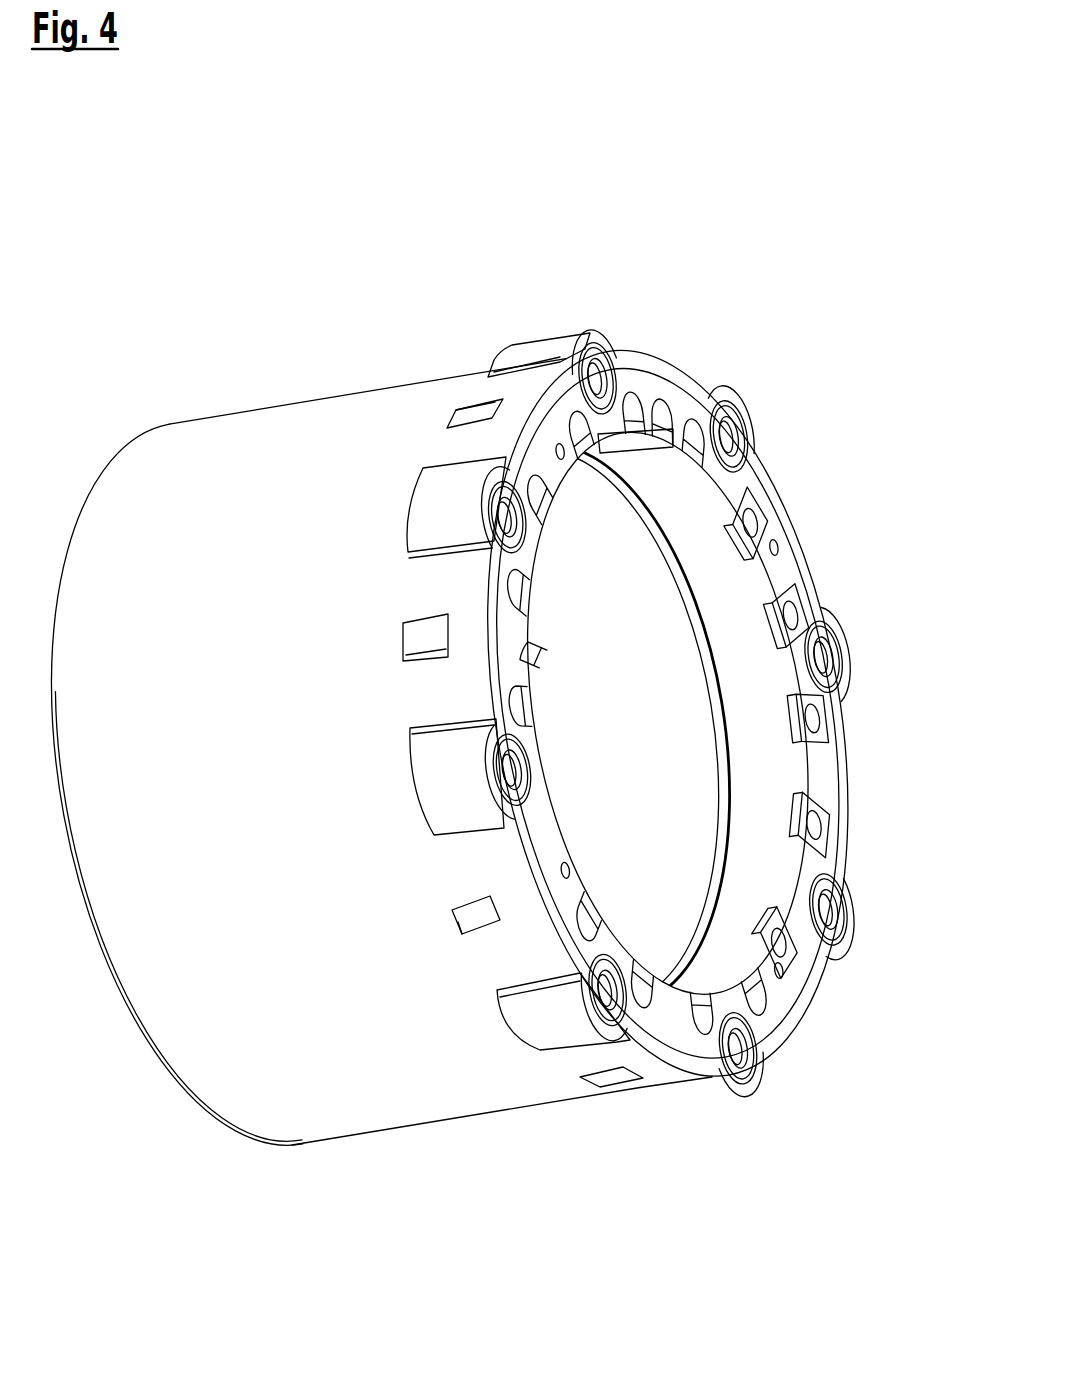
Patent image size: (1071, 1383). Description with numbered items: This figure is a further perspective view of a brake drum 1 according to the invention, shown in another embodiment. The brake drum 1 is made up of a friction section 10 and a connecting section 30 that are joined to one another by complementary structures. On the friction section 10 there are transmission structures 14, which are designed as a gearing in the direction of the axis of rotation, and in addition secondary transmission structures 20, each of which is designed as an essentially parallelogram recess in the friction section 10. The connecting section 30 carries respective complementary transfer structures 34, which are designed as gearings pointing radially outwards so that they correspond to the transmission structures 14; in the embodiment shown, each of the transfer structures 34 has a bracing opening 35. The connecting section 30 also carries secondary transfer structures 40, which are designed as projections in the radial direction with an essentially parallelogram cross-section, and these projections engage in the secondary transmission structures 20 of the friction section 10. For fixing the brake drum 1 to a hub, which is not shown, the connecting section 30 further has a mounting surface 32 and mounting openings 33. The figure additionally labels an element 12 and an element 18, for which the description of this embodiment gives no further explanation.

The brake drum 1 is at (287, 278).
The friction section 10 is at (168, 389).
The interior receiving space 12 is at (630, 658).
The transmission structures 14 is at (527, 397).
The housing wall 18 is at (342, 1068).
The secondary transmission structures 20 is at (463, 950).
The connecting section 30 is at (762, 326).
The mounting surface 32 is at (675, 1023).
The mounting openings 33 is at (793, 726).
The transfer structures 34 is at (553, 1018).
The bracing opening 35 is at (823, 920).
The secondary transfer structures 40 is at (481, 407).